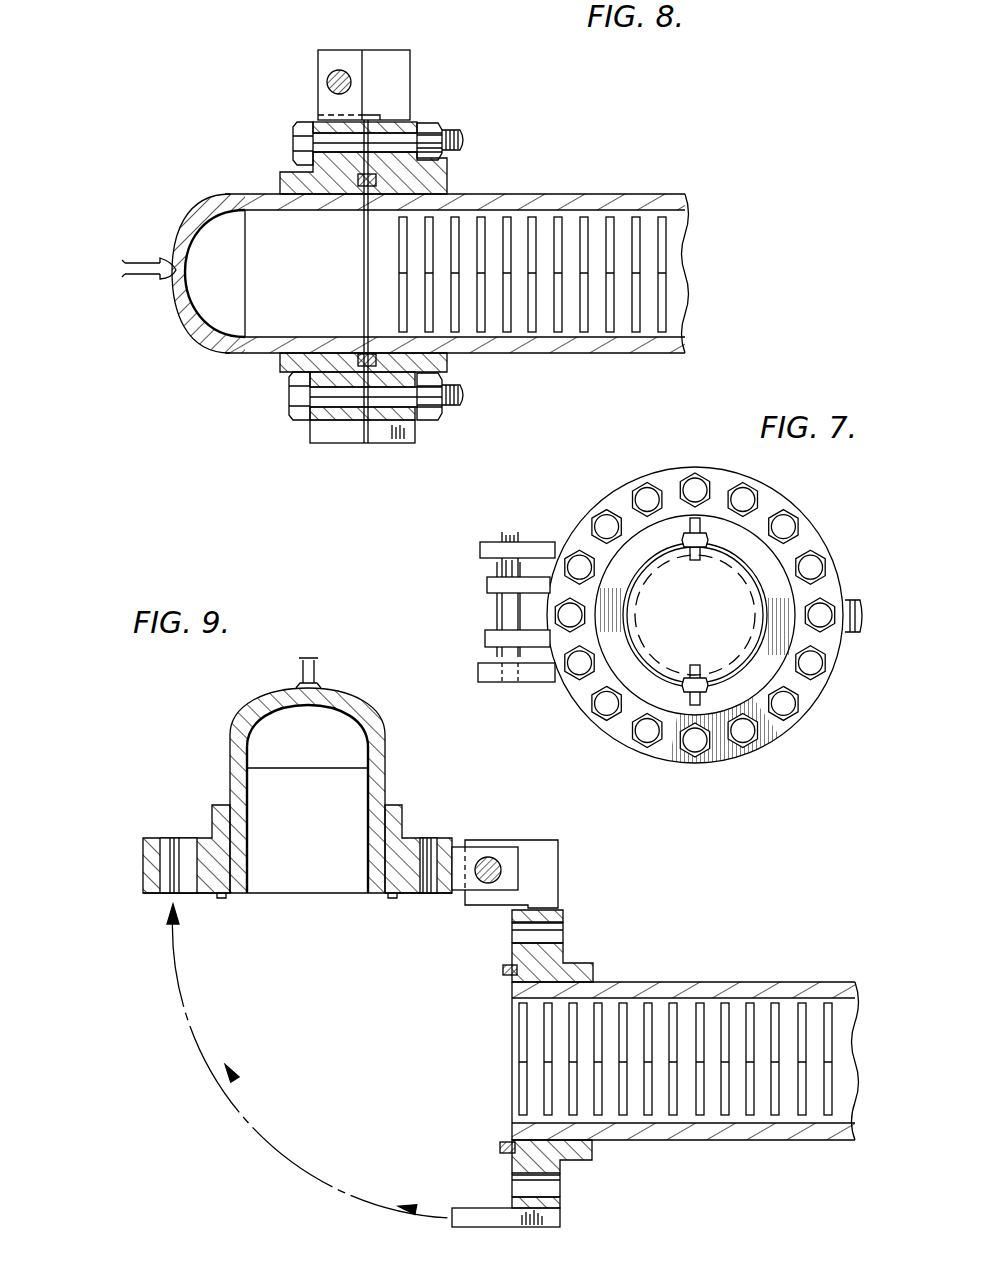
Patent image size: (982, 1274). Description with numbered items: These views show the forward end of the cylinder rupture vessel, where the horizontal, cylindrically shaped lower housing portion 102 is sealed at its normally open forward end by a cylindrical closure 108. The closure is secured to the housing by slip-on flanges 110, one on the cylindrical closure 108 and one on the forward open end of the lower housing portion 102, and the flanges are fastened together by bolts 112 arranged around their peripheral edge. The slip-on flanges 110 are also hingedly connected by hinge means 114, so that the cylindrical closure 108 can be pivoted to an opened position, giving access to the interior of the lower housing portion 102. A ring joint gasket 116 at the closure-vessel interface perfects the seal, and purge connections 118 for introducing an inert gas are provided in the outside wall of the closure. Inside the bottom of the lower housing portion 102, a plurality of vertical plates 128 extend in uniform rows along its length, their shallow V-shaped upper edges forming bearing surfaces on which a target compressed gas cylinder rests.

In FIG. 8, the lower housing portion 102 is at (625, 195).
In FIG. 9, the lower housing portion 102 is at (780, 990).
In FIG. 8, the cylindrical closure 108 is at (187, 220).
In FIG. 7, the cylindrical closure 108 is at (758, 582).
In FIG. 9, the cylindrical closure 108 is at (352, 700).
In FIG. 8, the slip-on flanges 110 is at (282, 186).
In FIG. 9, the slip-on flanges 110 is at (402, 820).
In FIG. 8, the bolts 112 is at (465, 141).
In FIG. 7, the bolts 112 is at (705, 482).
In FIG. 8, the hinge means 114 is at (398, 55).
In FIG. 7, the hinge means 114 is at (485, 585).
In FIG. 9, the hinge means 114 is at (550, 858).
In FIG. 8, the ring joint gasket 116 is at (300, 374).
In FIG. 9, the ring joint gasket 116 is at (500, 1147).
In FIG. 7, the purge connections 118 is at (691, 678).
In FIG. 8, the vertical plates 128 is at (558, 218).